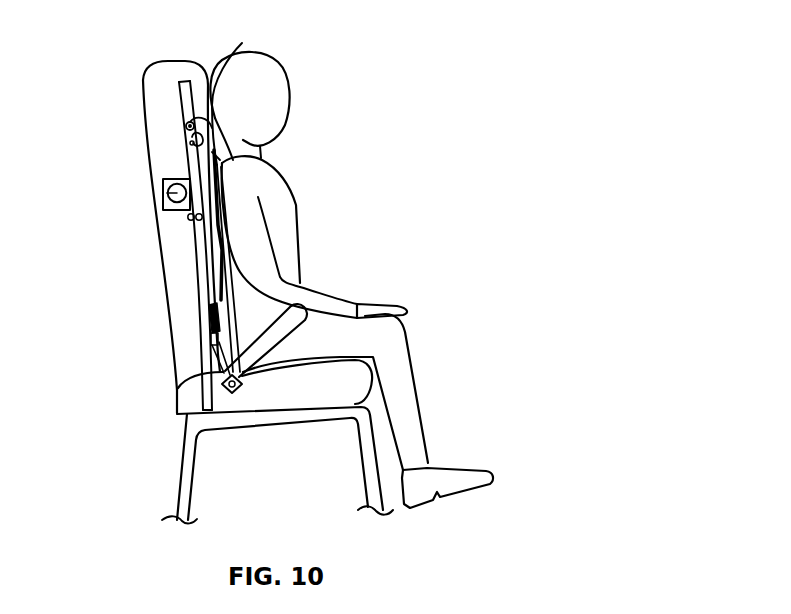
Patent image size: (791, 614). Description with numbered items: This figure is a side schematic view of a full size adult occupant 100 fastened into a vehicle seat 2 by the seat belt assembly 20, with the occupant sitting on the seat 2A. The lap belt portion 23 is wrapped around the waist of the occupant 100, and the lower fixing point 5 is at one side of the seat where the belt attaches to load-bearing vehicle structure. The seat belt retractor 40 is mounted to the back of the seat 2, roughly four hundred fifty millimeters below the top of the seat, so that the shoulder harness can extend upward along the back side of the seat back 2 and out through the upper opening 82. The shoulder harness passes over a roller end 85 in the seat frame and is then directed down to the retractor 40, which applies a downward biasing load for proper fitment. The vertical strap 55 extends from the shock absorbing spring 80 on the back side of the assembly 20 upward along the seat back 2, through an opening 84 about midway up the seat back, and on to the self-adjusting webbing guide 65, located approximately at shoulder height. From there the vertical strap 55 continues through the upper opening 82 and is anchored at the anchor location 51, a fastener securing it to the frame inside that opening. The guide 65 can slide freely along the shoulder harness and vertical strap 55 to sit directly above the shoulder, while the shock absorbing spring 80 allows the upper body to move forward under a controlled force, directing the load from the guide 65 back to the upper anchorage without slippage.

The vehicle seat 2 is at (160, 73).
The seat 2A is at (262, 407).
The lower fixing point 5 is at (177, 413).
The seat belt assembly 20 is at (270, 165).
The lap belt portion 23 is at (272, 343).
The seat belt retractor 40 is at (167, 193).
The anchor location 51 is at (190, 146).
The vertical strap 55 is at (218, 268).
The self-adjusting webbing guide 65 is at (214, 155).
The shock absorbing spring 80 is at (210, 320).
The upper opening 82 is at (234, 195).
The opening 84 is at (220, 232).
The roller end 85 is at (186, 125).
The adult occupant 100 is at (272, 89).